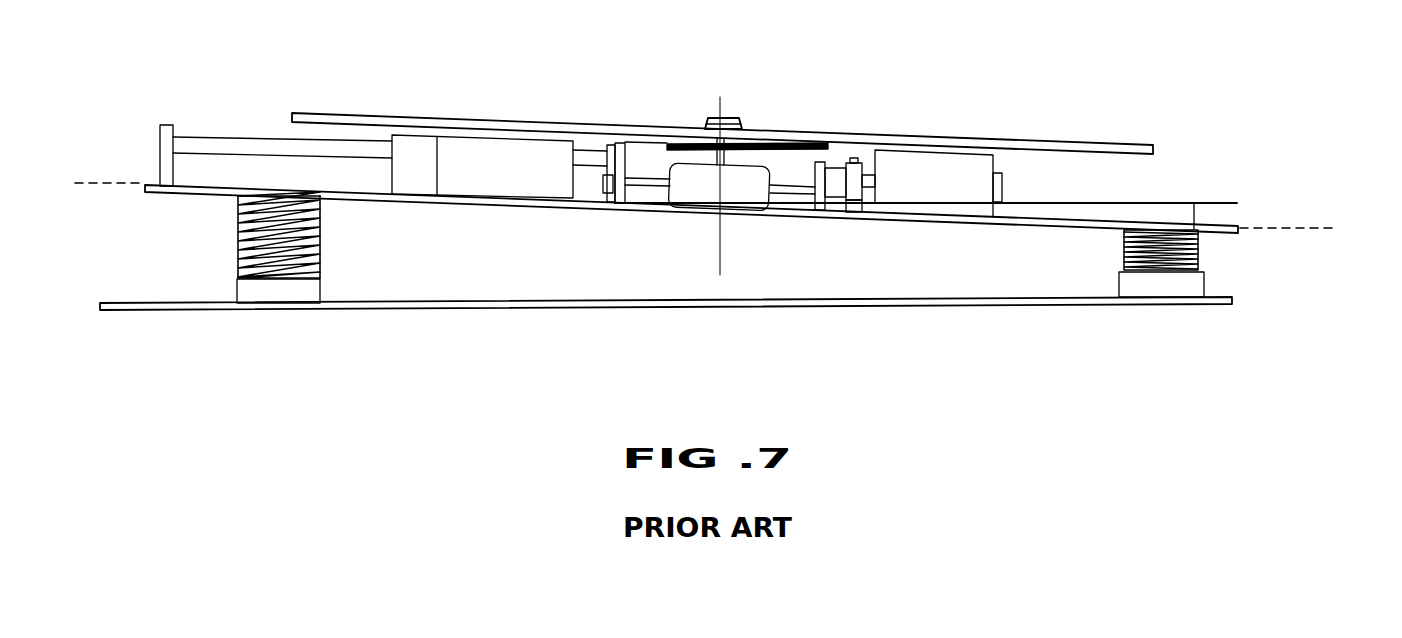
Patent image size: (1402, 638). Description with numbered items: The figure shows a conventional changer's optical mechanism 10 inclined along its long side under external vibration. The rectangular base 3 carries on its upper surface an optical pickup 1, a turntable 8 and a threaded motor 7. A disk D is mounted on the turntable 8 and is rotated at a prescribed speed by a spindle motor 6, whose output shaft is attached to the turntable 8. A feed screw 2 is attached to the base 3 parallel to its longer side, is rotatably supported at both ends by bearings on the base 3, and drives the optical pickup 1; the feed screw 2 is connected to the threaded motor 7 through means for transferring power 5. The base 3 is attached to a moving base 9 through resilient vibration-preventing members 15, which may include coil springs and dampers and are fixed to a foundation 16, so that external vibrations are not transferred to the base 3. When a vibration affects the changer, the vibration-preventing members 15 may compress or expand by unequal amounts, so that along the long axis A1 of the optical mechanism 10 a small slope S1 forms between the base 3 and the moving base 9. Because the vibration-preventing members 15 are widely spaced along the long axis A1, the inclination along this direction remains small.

The optical pickup 1 is at (497, 150).
The feed screw 2 is at (252, 147).
The base 3 is at (357, 182).
The means for transferring power 5 is at (605, 185).
The spindle motor 6 is at (693, 193).
The threaded motor 7 is at (948, 163).
The turntable 8 is at (730, 115).
The moving base 9 is at (860, 297).
The optical mechanism 10 is at (733, 195).
The vibration-preventing members 15 is at (238, 235).
The foundation 16 is at (317, 295).
The disk D is at (348, 112).
The small slope S1 is at (952, 207).
The long axis A1 is at (733, 213).